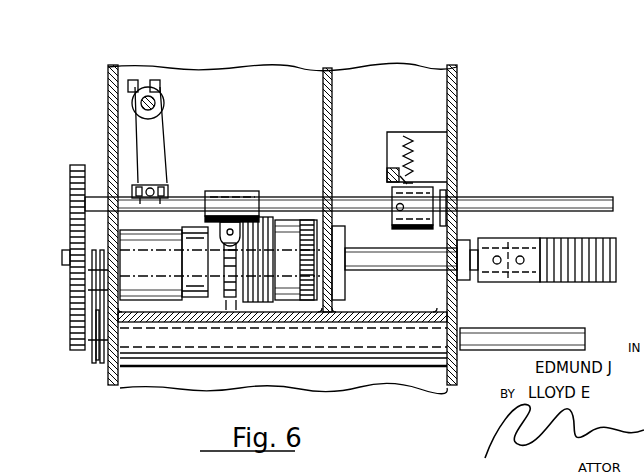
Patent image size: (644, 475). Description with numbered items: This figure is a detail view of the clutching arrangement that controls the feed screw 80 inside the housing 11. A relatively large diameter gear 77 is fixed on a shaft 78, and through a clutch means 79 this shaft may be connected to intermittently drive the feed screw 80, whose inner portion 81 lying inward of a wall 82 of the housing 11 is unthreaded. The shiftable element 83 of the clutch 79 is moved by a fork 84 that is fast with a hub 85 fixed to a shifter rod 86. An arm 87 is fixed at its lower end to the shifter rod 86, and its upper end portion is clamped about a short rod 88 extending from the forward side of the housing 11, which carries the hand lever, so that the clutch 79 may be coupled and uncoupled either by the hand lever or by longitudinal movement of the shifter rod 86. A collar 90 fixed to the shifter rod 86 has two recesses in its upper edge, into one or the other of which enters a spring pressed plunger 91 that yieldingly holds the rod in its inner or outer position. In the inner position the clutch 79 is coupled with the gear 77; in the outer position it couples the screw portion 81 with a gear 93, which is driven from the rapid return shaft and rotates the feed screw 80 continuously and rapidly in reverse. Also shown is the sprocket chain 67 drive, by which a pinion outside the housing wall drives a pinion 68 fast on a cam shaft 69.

The housing 11 is at (285, 62).
The sprocket chain 67 is at (93, 292).
The pinion 68 is at (96, 360).
The cam shaft 69 is at (148, 346).
The relatively large diameter gear 77 is at (70, 198).
The shaft 78 is at (158, 270).
The clutch means 79 is at (236, 296).
The feed screw 80 is at (606, 284).
The inner portion of feed screw 81 is at (426, 260).
The wall of housing 82 is at (457, 85).
The shiftable clutch element 83 is at (226, 298).
The fork 84 is at (233, 218).
The hub 85 is at (228, 192).
The shifter rod 86 is at (272, 196).
The arm 87 is at (162, 140).
The short rod 88 is at (156, 104).
The collar 90 is at (392, 230).
The spring pressed plunger 91 is at (408, 177).
The gear 93 is at (310, 196).